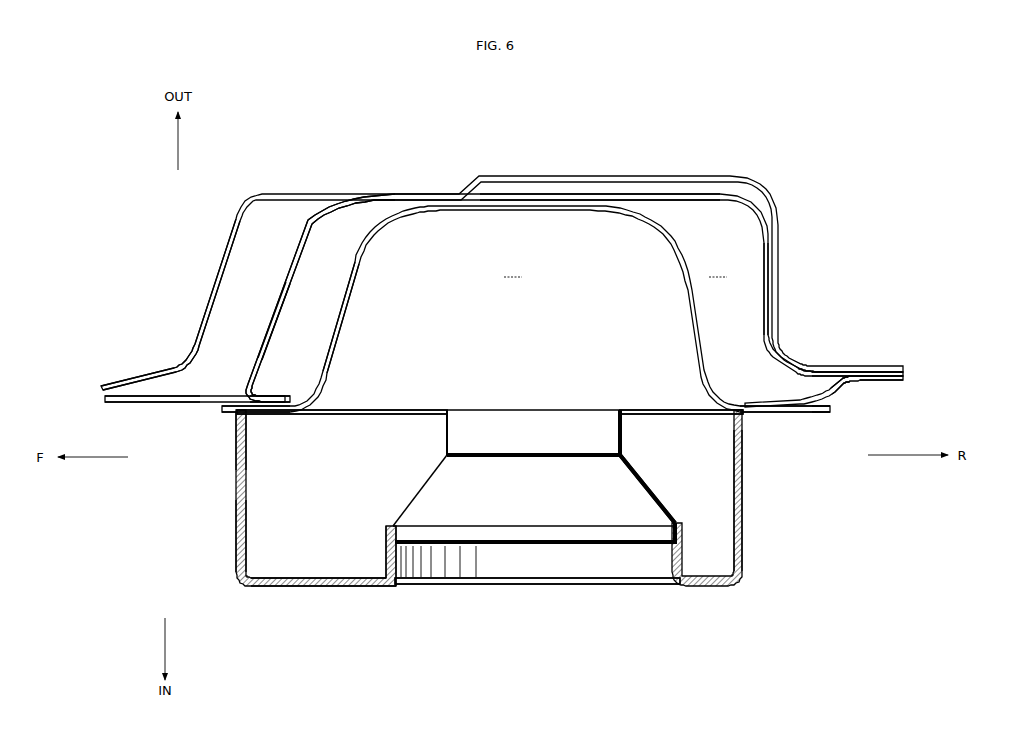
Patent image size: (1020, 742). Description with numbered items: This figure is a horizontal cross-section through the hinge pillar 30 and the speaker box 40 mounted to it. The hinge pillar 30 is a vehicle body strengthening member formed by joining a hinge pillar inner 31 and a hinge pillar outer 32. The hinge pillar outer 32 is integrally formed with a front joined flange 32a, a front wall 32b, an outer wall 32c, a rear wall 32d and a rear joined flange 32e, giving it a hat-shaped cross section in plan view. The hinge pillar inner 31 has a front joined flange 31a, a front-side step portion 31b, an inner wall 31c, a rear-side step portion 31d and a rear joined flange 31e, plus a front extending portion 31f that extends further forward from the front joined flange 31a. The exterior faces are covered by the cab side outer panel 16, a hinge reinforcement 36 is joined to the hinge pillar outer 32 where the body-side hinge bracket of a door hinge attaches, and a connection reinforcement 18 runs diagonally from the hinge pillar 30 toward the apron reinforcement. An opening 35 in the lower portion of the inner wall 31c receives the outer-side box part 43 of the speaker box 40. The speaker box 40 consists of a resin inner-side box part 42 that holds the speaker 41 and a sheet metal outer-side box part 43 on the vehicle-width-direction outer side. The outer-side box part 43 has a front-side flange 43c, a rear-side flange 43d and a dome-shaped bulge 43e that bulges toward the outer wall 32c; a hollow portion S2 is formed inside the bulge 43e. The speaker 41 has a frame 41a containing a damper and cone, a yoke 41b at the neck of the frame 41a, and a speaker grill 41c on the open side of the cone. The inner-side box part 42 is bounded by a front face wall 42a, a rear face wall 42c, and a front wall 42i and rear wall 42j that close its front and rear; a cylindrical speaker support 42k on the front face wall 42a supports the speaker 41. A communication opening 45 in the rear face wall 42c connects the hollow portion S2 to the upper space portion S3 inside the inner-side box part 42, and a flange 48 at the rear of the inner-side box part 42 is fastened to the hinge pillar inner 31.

The cab side outer panel 16 is at (688, 176).
The connection reinforcement 18 is at (228, 239).
The hinge pillar 30 is at (284, 288).
The hinge pillar inner 31 is at (205, 403).
The front joined flange 31a is at (165, 403).
The front-side step portion 31b is at (238, 397).
The inner wall 31c is at (253, 404).
The rear-side step portion 31d is at (846, 393).
The rear joined flange 31e is at (888, 382).
The front extending portion 31f is at (104, 398).
The hinge pillar outer 32 is at (386, 196).
The front joined flange 32a is at (186, 370).
The front wall 32b is at (270, 318).
The outer wall 32c is at (372, 210).
The rear wall 32d is at (765, 323).
The rear joined flange 32e is at (842, 367).
The opening 35 is at (770, 403).
The hinge reinforcement 36 is at (612, 194).
The speaker box 40 is at (232, 500).
The speaker 41 is at (578, 406).
The frame 41a is at (641, 481).
The yoke 41b is at (484, 425).
The speaker grill 41c is at (514, 545).
The inner-side box part 42 is at (745, 507).
The front face wall 42a is at (323, 588).
The rear face wall 42c is at (264, 417).
The front wall 42i is at (246, 528).
The rear wall 42j is at (733, 468).
The speaker support 42k is at (388, 563).
The outer-side box part 43 is at (677, 246).
The front-side flange 43c is at (230, 414).
The rear-side flange 43d is at (760, 414).
The bulge 43e is at (352, 281).
The communication opening 45 is at (373, 408).
The flange 48 is at (822, 416).
The hollow portion S2 is at (513, 269).
The upper space portion S3 is at (718, 269).